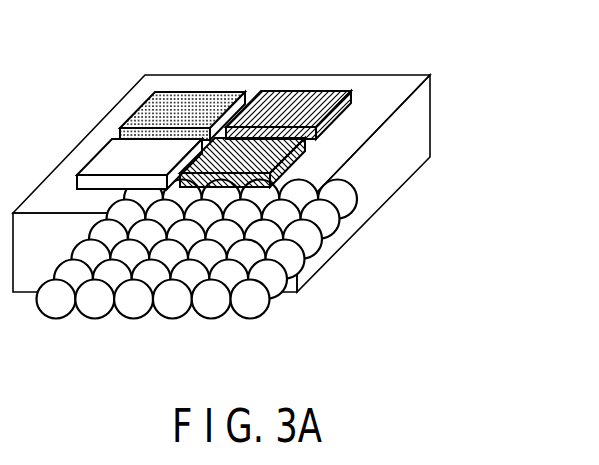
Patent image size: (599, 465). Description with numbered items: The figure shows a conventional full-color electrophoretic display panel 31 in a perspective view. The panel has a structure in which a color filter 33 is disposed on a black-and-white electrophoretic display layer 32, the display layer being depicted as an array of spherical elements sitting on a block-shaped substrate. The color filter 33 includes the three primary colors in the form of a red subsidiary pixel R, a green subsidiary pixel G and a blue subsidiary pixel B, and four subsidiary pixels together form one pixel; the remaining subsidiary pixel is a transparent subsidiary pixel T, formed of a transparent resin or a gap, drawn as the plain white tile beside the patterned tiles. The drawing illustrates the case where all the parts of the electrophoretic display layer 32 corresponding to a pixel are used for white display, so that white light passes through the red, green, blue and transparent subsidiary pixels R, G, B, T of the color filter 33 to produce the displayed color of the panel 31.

The full-color electrophoretic display panel 31 is at (466, 112).
The electrophoretic display layer 32 is at (55, 308).
The color filter 33 is at (233, 74).
The green subsidiary pixel G is at (157, 105).
The red subsidiary pixel R is at (312, 105).
The transparent subsidiary pixel T is at (110, 157).
The blue subsidiary pixel B is at (363, 178).